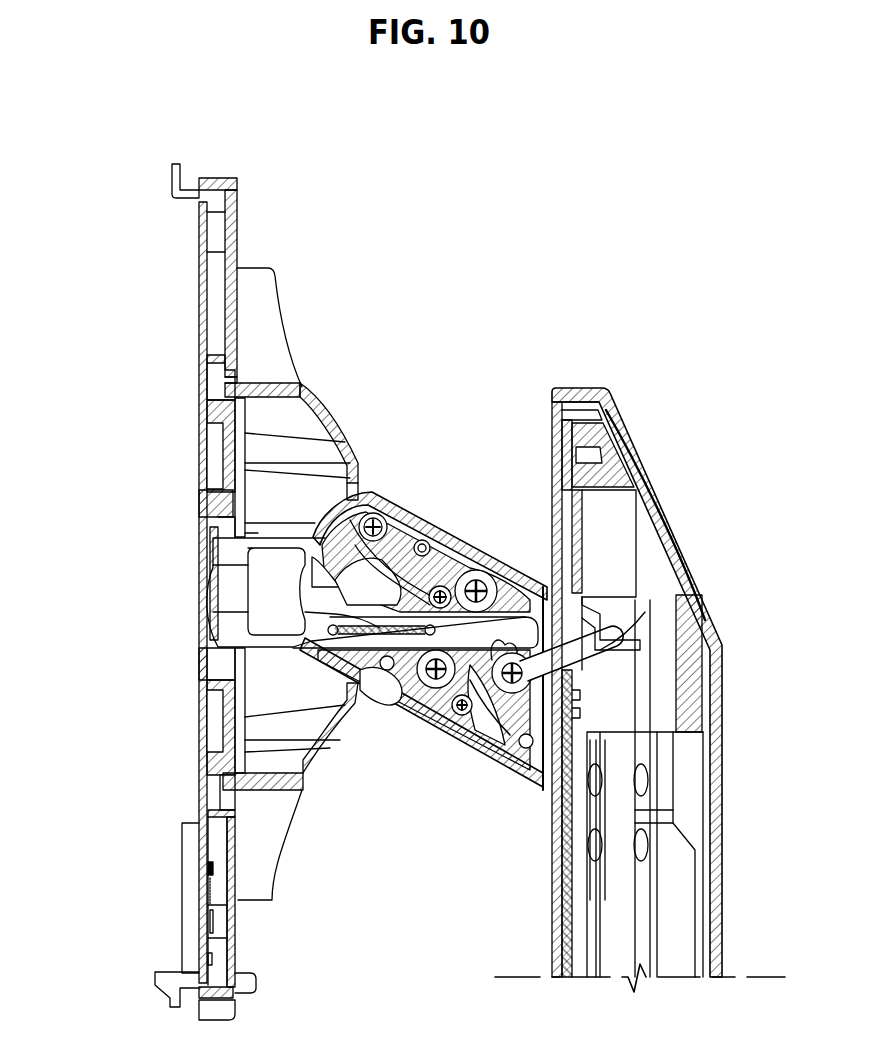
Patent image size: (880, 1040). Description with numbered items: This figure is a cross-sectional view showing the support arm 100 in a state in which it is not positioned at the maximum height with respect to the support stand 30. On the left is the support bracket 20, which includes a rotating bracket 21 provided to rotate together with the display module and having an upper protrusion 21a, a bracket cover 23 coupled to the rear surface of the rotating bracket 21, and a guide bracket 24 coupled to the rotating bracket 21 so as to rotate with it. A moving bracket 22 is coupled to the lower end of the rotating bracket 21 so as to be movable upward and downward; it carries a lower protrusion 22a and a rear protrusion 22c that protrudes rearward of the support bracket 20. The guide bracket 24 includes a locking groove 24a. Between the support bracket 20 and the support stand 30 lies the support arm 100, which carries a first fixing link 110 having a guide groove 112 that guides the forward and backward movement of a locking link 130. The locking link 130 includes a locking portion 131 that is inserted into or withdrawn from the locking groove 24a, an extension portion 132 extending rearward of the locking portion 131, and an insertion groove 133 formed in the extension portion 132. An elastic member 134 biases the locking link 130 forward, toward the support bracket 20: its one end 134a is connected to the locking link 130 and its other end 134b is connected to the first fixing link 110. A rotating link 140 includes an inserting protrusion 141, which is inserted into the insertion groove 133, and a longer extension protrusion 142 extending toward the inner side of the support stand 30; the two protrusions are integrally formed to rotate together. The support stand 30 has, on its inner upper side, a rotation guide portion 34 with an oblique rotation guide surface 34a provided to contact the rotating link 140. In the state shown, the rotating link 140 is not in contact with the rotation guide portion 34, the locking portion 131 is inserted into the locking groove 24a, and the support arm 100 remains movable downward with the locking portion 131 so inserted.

The support bracket 20 is at (270, 162).
The rotating bracket 21 is at (199, 252).
The upper protrusion 21a is at (175, 162).
The moving bracket 22 is at (190, 862).
The lower protrusion 22a is at (163, 990).
The rear protrusion 22c is at (250, 980).
The bracket cover 23 is at (237, 212).
The guide bracket 24 is at (210, 512).
The locking groove 24a is at (216, 662).
The support stand 30 is at (640, 372).
The rotation guide portion 34 is at (665, 598).
The rotation guide surface 34a is at (588, 626).
The support arm 100 is at (412, 748).
The first fixing link 110 is at (426, 542).
The guide groove 112 is at (440, 592).
The locking link 130 is at (368, 585).
The locking portion 131 is at (200, 580).
The extension portion 132 is at (474, 630).
The insertion groove 133 is at (537, 585).
The elastic member 134 is at (385, 648).
The one end of the elastic member 134a is at (432, 645).
The other end of the elastic member 134b is at (330, 630).
The rotating link 140 is at (524, 748).
The inserting protrusion 141 is at (500, 690).
The extension protrusion 142 is at (592, 650).